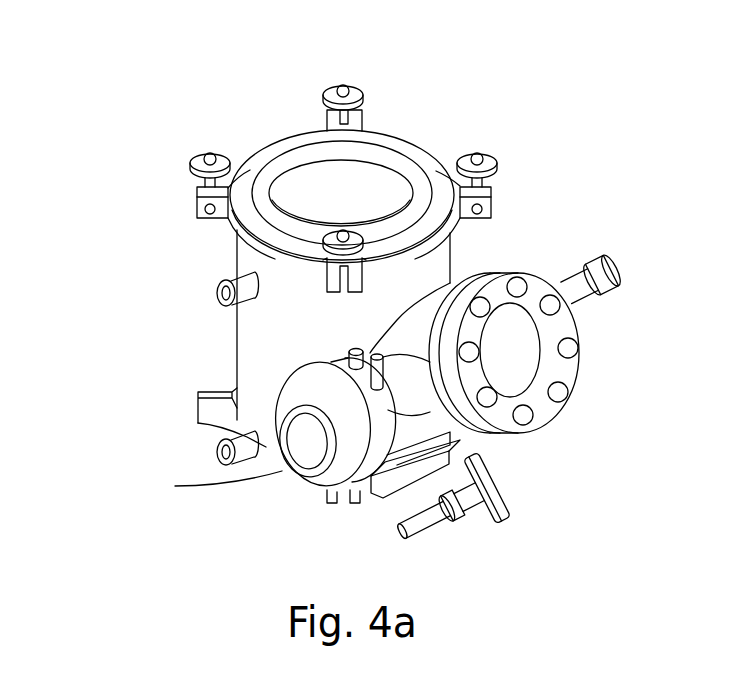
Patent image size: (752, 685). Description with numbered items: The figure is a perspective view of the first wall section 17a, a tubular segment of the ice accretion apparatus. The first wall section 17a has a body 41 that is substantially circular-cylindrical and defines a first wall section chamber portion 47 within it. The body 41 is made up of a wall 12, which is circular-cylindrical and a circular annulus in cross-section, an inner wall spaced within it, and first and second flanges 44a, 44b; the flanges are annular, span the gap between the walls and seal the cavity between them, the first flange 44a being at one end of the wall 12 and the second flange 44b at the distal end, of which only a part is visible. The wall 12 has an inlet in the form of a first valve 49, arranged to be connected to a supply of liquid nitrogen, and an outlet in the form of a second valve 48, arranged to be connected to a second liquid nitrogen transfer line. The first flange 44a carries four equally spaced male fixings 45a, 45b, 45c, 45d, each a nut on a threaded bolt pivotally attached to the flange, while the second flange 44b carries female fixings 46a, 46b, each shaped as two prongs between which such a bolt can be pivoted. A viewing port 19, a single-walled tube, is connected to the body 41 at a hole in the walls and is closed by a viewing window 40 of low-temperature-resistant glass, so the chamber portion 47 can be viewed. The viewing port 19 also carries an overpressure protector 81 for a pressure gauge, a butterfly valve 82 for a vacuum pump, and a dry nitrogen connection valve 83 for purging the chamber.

The first wall section 17a is at (157, 66).
The male fixing 45b is at (322, 84).
The first flange 44a is at (360, 138).
The first wall section chamber portion 47 is at (349, 188).
The male fixing 45a is at (191, 162).
The male fixing 45c is at (493, 162).
The wall 12 is at (247, 253).
The male fixing 45d is at (400, 252).
The second valve 48 is at (217, 291).
The overpressure protector 81 is at (618, 283).
The body 41 is at (270, 333).
The viewing window 40 is at (515, 355).
The female fixing 46a is at (197, 423).
The viewing port 19 is at (550, 443).
The first valve 49 is at (217, 463).
The second flange 44b is at (280, 472).
The female fixing 46b is at (323, 493).
The butterfly valve 82 is at (356, 468).
The dry nitrogen connection valve 83 is at (485, 520).